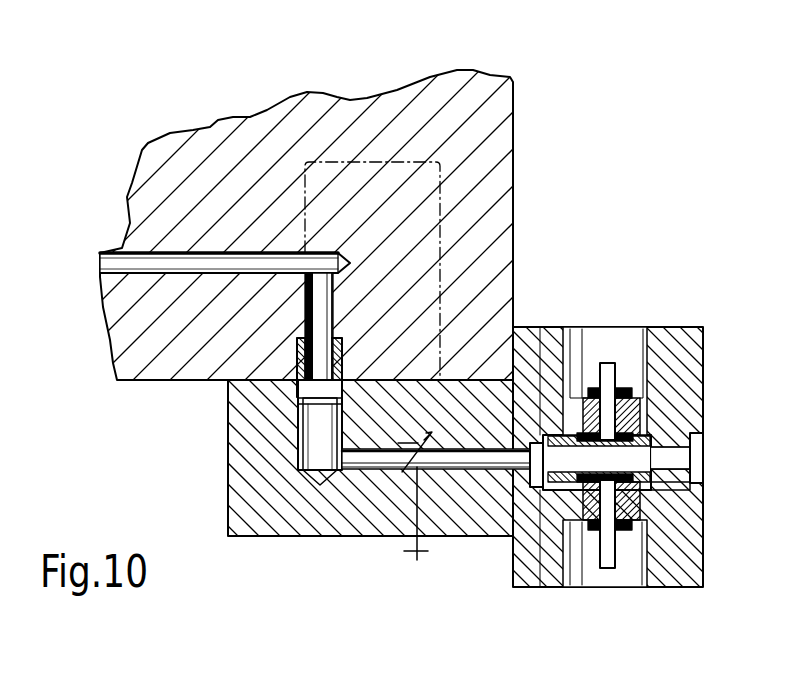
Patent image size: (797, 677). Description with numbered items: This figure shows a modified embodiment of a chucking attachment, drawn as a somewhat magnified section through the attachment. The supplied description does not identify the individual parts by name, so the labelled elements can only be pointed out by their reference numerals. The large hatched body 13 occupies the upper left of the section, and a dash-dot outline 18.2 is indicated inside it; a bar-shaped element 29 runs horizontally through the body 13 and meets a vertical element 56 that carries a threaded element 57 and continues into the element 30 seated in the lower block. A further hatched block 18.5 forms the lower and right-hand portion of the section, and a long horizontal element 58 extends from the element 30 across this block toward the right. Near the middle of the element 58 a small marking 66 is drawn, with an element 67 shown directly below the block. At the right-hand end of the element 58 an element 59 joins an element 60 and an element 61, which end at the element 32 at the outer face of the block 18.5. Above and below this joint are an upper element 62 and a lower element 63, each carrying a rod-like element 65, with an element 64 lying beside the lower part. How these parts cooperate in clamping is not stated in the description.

The first housing block 13 is at (212, 148).
The chamber outline 18.2 is at (443, 193).
The actuating bar 29 is at (102, 272).
The vertical rod 56 is at (303, 313).
The threaded nut 57 is at (300, 390).
The locking pin 30 is at (318, 450).
The housing block 18.5 is at (512, 560).
The horizontal rod 58 is at (355, 460).
The sensor marker 66 is at (415, 477).
The contact 67 is at (417, 560).
The coupling head 59 is at (535, 482).
The coupling body 60 is at (542, 445).
The rod sleeve 61 is at (690, 430).
The end piece 32 is at (706, 447).
The upper piston 62 is at (548, 440).
The lower piston 63 is at (553, 487).
The guide sleeve 64 is at (660, 495).
The piston rods 65 is at (615, 372).